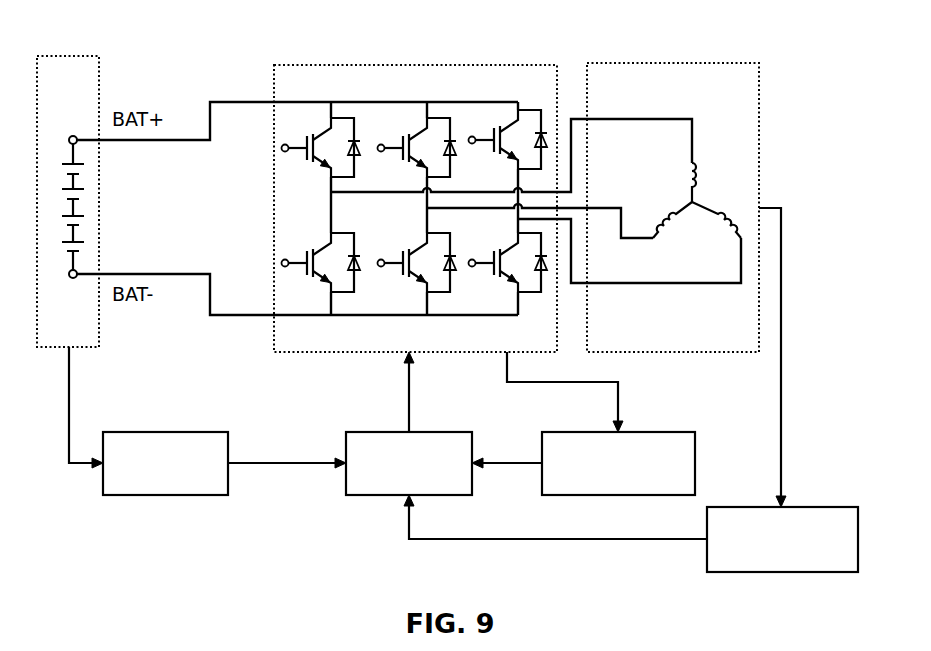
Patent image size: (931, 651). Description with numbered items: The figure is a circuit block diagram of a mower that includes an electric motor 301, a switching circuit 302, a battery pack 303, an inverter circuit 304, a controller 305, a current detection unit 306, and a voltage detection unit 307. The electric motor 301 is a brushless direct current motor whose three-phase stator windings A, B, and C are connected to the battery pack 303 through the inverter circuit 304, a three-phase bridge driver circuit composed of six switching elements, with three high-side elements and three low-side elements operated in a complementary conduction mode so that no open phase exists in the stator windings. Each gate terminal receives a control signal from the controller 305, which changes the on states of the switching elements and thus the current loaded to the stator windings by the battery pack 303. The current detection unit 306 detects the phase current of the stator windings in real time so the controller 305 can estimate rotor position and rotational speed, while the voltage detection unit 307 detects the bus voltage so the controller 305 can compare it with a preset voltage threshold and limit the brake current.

The electric motor 301 is at (672, 63).
The switching circuit 302 is at (165, 432).
The battery pack 303 is at (68, 56).
The inverter circuit 304 is at (413, 65).
The controller 305 is at (438, 432).
The current detection unit 306 is at (795, 507).
The voltage detection unit 307 is at (624, 432).